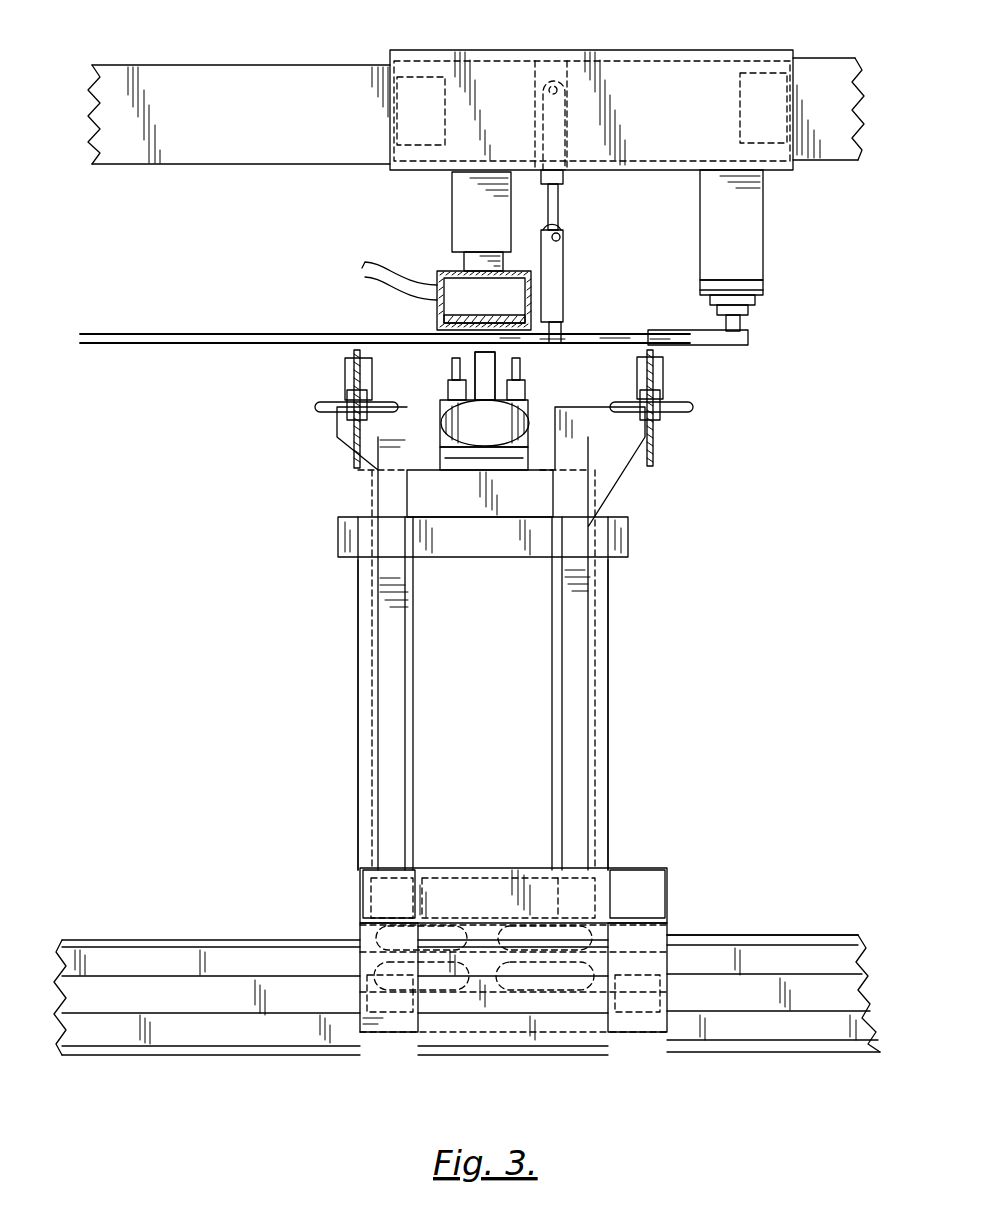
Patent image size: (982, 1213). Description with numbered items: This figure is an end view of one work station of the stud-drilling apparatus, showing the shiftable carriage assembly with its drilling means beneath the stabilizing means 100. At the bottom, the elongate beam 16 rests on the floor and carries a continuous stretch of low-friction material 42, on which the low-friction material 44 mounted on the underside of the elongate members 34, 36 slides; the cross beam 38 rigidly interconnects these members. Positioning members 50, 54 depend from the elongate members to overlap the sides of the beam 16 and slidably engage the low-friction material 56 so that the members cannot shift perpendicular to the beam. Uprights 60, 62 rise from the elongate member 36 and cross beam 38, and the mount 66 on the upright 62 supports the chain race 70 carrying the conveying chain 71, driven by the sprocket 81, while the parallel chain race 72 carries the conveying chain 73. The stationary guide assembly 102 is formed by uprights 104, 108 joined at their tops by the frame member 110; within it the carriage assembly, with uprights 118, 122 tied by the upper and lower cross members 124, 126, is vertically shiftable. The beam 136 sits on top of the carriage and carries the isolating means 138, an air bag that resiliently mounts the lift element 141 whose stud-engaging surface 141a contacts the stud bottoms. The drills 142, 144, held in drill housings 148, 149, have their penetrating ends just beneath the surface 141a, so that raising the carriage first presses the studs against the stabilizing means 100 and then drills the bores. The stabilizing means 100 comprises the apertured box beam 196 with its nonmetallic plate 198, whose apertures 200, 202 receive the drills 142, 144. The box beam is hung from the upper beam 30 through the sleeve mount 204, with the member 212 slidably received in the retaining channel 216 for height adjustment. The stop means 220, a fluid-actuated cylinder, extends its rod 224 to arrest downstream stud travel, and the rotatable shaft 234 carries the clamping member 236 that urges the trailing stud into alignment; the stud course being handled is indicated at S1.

The elongate beam 16 is at (853, 958).
The laterally extending beam 30 is at (295, 88).
The elongate member 34 is at (665, 881).
The elongate member 36 is at (363, 880).
The cross beam 38 is at (495, 872).
The low-friction material 42 is at (770, 938).
The low-friction material 44 is at (667, 928).
The positioning member 50 is at (650, 1030).
The positioning member 54 is at (416, 1030).
The low-friction material 56 is at (660, 980).
The upright 60 is at (413, 732).
The upright 62 is at (562, 732).
The mount 66 is at (582, 410).
The chain race 70 is at (660, 376).
The conveying chain 71 is at (652, 466).
The chain race 72 is at (345, 386).
The conveying chain 73 is at (360, 470).
The sprocket 81 is at (668, 412).
The stabilizing means 100 is at (298, 258).
The guide assembly 102 is at (630, 606).
The upright 104 is at (555, 778).
The upright 108 is at (413, 778).
The frame member 110 is at (630, 545).
The upright 118 is at (598, 645).
The upright 122 is at (372, 641).
The cross member 124 is at (595, 488).
The cross member 126 is at (378, 490).
The beam 136 is at (480, 493).
The isolating means 138 is at (484, 436).
The lift element 141 is at (484, 423).
The stud-engaging surface 141a is at (485, 352).
The drill 142 is at (452, 372).
The drill 144 is at (510, 376).
The drill housing 148 is at (450, 392).
The drill housing 149 is at (524, 394).
The box beam 196 is at (393, 285).
The nonmetallic plate 198 is at (430, 318).
The aperture 200 is at (484, 300).
The aperture 202 is at (466, 318).
The sleeve mount 204 is at (665, 83).
The member 212 is at (465, 262).
The retaining channel 216 is at (470, 205).
The stop means 220 is at (553, 262).
The extendible-retractable rod 224 is at (561, 332).
The rotatable shaft 234 is at (737, 323).
The clamping member 236 is at (718, 340).
The sheet S1 is at (215, 340).